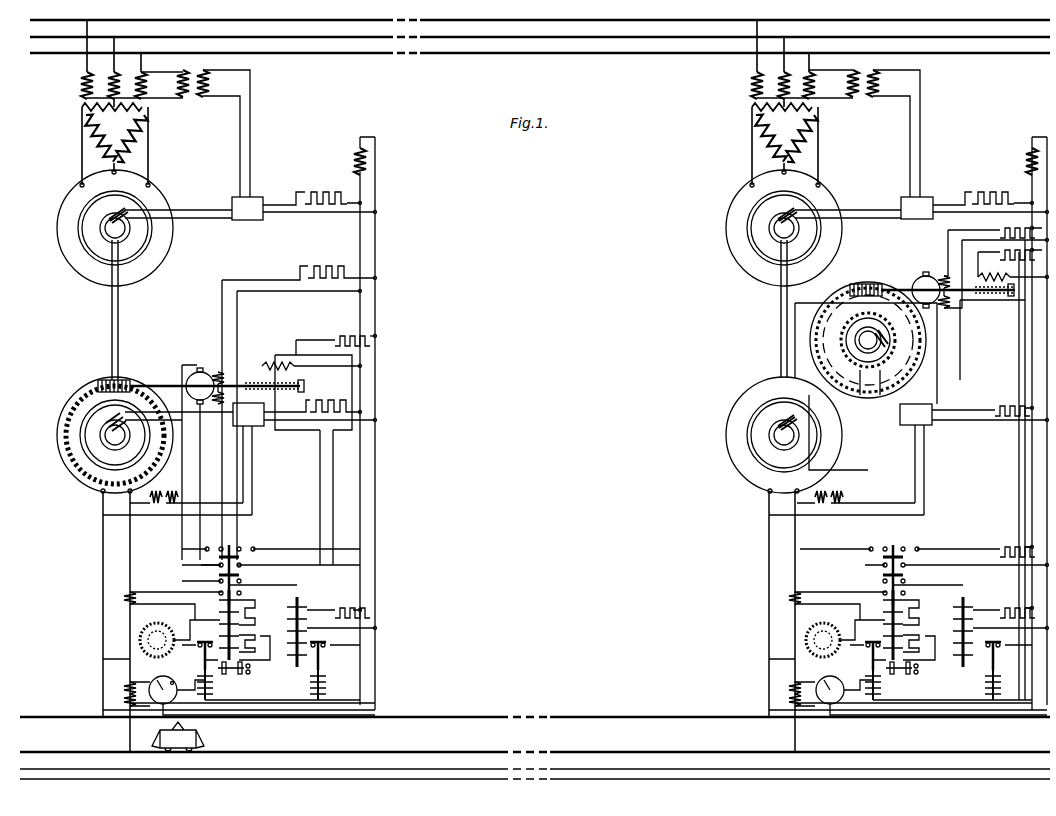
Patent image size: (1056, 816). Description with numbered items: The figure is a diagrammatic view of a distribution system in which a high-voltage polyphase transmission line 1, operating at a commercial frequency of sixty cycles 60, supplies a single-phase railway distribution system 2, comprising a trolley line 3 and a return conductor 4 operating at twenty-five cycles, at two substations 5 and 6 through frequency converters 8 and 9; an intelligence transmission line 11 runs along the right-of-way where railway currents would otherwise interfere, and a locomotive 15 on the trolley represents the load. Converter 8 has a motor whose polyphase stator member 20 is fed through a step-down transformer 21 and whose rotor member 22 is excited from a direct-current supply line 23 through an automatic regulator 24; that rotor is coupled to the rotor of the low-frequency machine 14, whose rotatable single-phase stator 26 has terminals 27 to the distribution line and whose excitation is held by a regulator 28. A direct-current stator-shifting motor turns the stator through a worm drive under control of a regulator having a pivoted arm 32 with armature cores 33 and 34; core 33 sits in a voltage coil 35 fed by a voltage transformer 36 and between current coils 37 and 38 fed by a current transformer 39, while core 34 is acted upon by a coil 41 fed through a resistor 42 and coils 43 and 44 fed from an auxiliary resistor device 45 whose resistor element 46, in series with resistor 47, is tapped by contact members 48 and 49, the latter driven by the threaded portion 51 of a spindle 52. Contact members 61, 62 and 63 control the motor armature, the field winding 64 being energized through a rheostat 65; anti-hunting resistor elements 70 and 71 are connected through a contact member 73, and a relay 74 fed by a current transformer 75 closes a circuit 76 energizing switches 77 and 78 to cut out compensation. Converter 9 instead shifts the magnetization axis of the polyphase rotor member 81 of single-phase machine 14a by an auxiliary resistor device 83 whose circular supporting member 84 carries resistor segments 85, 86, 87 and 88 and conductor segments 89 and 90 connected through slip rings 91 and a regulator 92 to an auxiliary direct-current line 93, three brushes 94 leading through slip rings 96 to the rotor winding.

The polyphase transmission line 1 is at (562, 42).
The single-phase railway distribution system 2 is at (266, 740).
The trolley line 3 is at (478, 718).
The return conductor 4 is at (488, 752).
The substation 5 is at (172, 327).
The substation 6 is at (968, 340).
The frequency converter 8 is at (110, 320).
The frequency converter 9 is at (778, 327).
The intelligence transmission line 11 is at (440, 775).
The synchronous machine 14 is at (56, 432).
The single-phase machine 14a is at (730, 440).
The locomotive 15 is at (198, 736).
The polyphase stator member 20 is at (152, 192).
The step-down transformer 21 is at (74, 110).
The rotor member 22 is at (145, 240).
The direct-current supply line 23 is at (374, 243).
The automatic regulator 24 is at (255, 197).
The single-phase stator 26 is at (94, 382).
The terminals 27 is at (102, 493).
The regulator 28 is at (238, 427).
The pivoted arm 32 is at (276, 582).
The armature core 33 is at (223, 600).
The armature core 34 is at (296, 600).
The voltage coil 35 is at (218, 619).
The voltage transformer 36 is at (138, 638).
The current coil 37 is at (220, 586).
The current coil 38 is at (234, 672).
The current transformer 39 is at (128, 595).
The coil 41 is at (308, 620).
The resistor 42 is at (342, 609).
The coil 43 is at (312, 598).
The coil 44 is at (310, 640).
The auxiliary resistor device 45 is at (313, 460).
The resistor element 46 is at (262, 366).
The series resistor 47 is at (336, 335).
The adjustable contact member 48 is at (292, 362).
The adjustable contact member 49 is at (272, 376).
The threaded portion 51 is at (300, 392).
The spindle 52 is at (251, 395).
The cycles 60 is at (993, 65).
The contact member 61 is at (232, 540).
The contact member 62 is at (220, 576).
The contact member 63 is at (218, 562).
The field winding 64 is at (218, 368).
The rheostat 65 is at (299, 408).
The resistor element 70 is at (285, 610).
The resistor element 71 is at (262, 640).
The contact member 73 is at (221, 691).
The relay 74 is at (168, 678).
The current transformer 75 is at (126, 688).
The circuit 76 is at (284, 698).
The electromagnetic switch 77 is at (196, 652).
The electromagnetic switch 78 is at (322, 660).
The rotor member 81 is at (754, 476).
The auxiliary resistor device 83 is at (831, 337).
The circular supporting member 84 is at (916, 378).
The resistor segment 85 is at (852, 300).
The resistor segment 86 is at (892, 296).
The resistor segment 87 is at (855, 392).
The resistor segment 88 is at (880, 392).
The conductor segment 89 is at (835, 318).
The conductor segment 90 is at (900, 330).
The slip rings 91 is at (850, 340).
The regulator 92 is at (910, 427).
The auxiliary direct-current line 93 is at (1034, 360).
The brushes 94 is at (778, 366).
The slip rings 96 is at (790, 445).